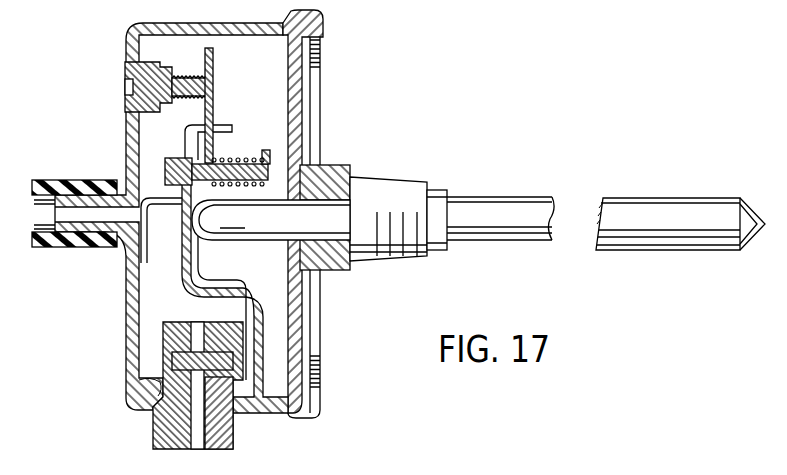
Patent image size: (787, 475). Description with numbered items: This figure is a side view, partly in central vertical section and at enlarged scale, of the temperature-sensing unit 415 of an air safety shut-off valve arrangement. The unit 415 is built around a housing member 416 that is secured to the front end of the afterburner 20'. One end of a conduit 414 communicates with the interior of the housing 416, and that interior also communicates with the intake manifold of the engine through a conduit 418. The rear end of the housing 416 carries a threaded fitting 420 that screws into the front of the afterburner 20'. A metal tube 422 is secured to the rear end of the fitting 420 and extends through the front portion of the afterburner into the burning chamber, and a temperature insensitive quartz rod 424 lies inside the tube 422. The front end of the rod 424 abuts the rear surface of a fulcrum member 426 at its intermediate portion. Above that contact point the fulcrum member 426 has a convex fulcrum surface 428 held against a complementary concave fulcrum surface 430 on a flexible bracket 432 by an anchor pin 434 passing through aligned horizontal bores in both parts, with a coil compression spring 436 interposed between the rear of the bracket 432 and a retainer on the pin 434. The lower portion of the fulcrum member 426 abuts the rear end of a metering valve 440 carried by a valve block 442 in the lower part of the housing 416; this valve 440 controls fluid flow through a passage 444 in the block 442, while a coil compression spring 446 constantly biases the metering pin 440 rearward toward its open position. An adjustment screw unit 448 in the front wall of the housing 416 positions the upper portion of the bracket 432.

The afterburner 20' is at (384, 230).
The conduit 414 is at (50, 248).
The temperature-sensing unit 415 is at (124, 293).
The housing member 416 is at (127, 331).
The conduit 418 is at (165, 435).
The threaded fitting 420 is at (362, 183).
The metal tube 422 is at (497, 206).
The quartz rod 424 is at (297, 210).
The fulcrum member 426 is at (200, 282).
The convex fulcrum surface 428 is at (216, 141).
The concave fulcrum surface 430 is at (175, 203).
The bracket 432 is at (209, 117).
The anchor pin 434 is at (165, 159).
The coil compression spring 436 is at (238, 156).
The metering valve 440 is at (191, 350).
The valve block 442 is at (162, 379).
The passage 444 is at (198, 421).
The coil compression spring 446 is at (245, 333).
The adjustment screw unit 448 is at (128, 106).